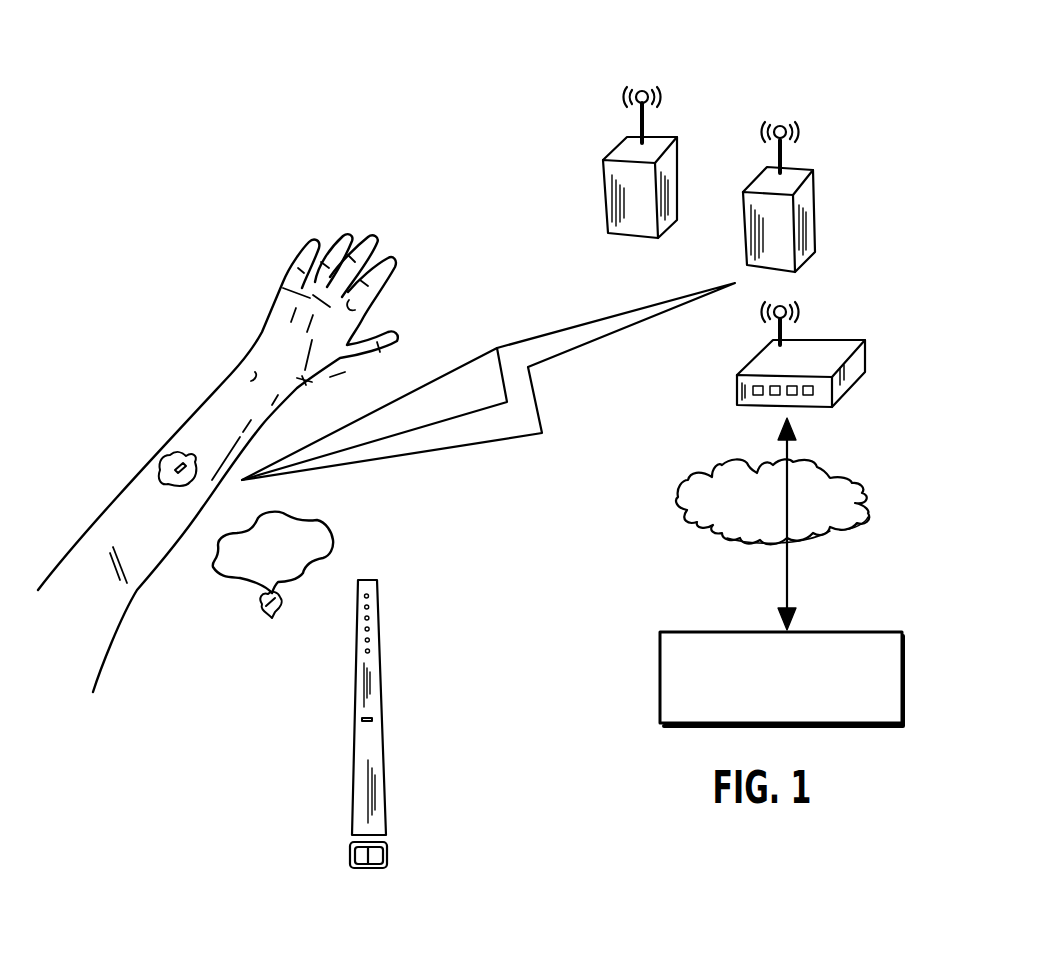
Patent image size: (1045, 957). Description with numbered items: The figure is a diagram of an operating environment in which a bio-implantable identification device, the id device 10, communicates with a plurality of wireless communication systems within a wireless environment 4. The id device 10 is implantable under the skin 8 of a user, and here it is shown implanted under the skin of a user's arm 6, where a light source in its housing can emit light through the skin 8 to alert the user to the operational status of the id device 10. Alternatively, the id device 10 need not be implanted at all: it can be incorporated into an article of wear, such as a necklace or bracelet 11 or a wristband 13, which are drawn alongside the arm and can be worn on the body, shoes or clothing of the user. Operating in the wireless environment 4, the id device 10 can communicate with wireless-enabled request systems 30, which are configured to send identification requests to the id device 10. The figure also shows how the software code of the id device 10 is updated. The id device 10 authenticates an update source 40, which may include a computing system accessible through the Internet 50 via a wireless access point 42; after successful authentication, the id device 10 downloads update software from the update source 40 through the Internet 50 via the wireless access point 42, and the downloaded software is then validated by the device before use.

The wireless environment 4 is at (468, 245).
The user's arm 6 is at (248, 348).
The skin 8 is at (193, 428).
The bio-implantable identification device 10 is at (177, 468).
The necklace or bracelet 11 is at (333, 552).
The wristband 13 is at (378, 668).
The wireless-enabled request systems 30 is at (765, 173).
The wireless access point 42 is at (842, 348).
The Internet 50 is at (730, 492).
The update source 40 is at (660, 637).